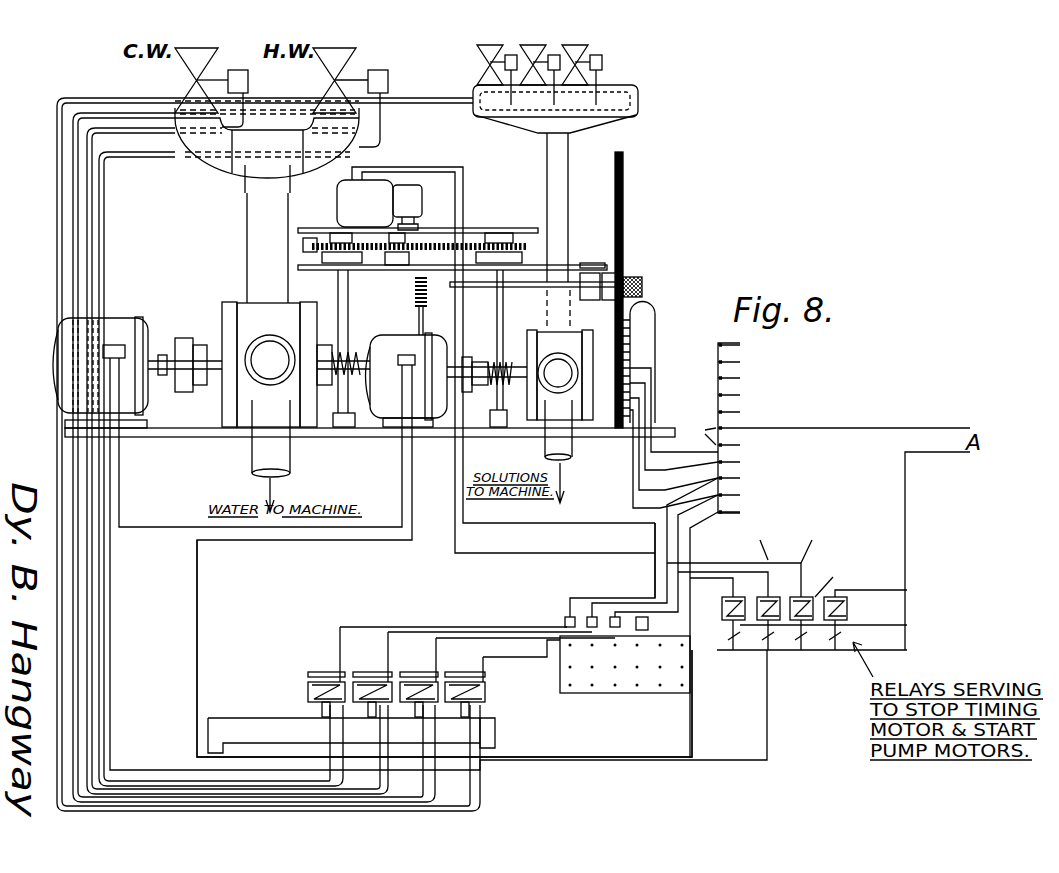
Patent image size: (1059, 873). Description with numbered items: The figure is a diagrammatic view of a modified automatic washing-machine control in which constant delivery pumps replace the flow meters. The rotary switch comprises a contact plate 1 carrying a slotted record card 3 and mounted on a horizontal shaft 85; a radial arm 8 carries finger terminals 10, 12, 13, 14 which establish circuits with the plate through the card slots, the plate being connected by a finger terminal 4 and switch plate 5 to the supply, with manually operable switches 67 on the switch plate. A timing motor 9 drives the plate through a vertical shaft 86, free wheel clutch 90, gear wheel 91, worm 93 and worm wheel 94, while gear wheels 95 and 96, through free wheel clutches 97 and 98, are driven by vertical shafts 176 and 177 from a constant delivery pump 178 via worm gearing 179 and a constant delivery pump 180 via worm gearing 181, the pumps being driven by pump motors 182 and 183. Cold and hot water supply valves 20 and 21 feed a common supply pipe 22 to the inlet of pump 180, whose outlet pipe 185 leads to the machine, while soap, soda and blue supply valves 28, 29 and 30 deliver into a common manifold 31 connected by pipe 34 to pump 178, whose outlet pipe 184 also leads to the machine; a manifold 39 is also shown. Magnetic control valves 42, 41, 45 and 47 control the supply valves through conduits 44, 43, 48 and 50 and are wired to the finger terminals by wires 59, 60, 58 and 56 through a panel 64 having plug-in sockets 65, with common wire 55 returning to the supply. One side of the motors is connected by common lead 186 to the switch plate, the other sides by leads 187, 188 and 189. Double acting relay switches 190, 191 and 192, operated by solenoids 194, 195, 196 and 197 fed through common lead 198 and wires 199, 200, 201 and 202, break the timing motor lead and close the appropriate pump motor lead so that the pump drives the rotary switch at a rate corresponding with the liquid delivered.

The contact plate 1 is at (615, 218).
The record card 3 is at (620, 218).
The finger terminal 4 is at (606, 428).
The switch plate 5 is at (740, 410).
The radial arm 8 is at (655, 312).
The electric motor 9 is at (384, 181).
The finger terminal 10 is at (630, 398).
The finger terminal 12 is at (630, 410).
The finger terminal 13 is at (630, 383).
The finger terminal 14 is at (630, 370).
The cold water supply valve 20 is at (184, 80).
The hot water supply valve 21 is at (326, 80).
The common supply pipe 22 is at (247, 230).
The soap supply valve 28 is at (478, 62).
The soda supply valve 29 is at (528, 55).
The blue supply valve 30 is at (570, 55).
The common manifold 31 is at (585, 120).
The common pipe 34 is at (568, 198).
The manifold 39 is at (250, 718).
The magnetic control valve 41 is at (308, 698).
The magnetic control valve 42 is at (372, 682).
The conduit 43 is at (102, 242).
The conduit 44 is at (90, 208).
The magnetic control valve 45 is at (485, 692).
The magnetic control valve 47 is at (420, 682).
The conduit 48 is at (65, 640).
The conduit 50 is at (77, 578).
The common wire 55 is at (907, 637).
The wire 56 is at (645, 610).
The wire 58 is at (717, 650).
The wire 59 is at (600, 603).
The wire 60 is at (567, 598).
The panel 64 is at (612, 690).
The plug-in socket 65 is at (646, 632).
The manually operable switch 67 is at (699, 432).
The horizontal shaft 85 is at (503, 296).
The vertical shaft 86 is at (412, 224).
The free wheel clutch 90 is at (396, 265).
The gear wheel 91 is at (442, 244).
The worm 93 is at (418, 300).
The worm wheel 94 is at (422, 312).
The gear wheel 95 is at (505, 233).
The gear wheel 96 is at (312, 238).
The free wheel clutch 97 is at (522, 257).
The free wheel clutch 98 is at (350, 263).
The vertical shaft 176 is at (497, 336).
The vertical shaft 177 is at (345, 348).
The constant delivery pump 178 is at (530, 392).
The worm gearing 179 is at (470, 392).
The constant delivery pump 180 is at (250, 410).
The worm gearing 181 is at (337, 376).
The pump motor 182 is at (410, 420).
The pump motor 183 is at (122, 403).
The outlet pipe 184 is at (568, 440).
The outlet pipe 185 is at (284, 470).
The common lead 186 is at (503, 359).
The lead 187 is at (508, 374).
The lead 188 is at (465, 648).
The lead 189 is at (460, 564).
The relay switch 190 is at (730, 650).
The relay switch 191 is at (768, 650).
The relay switch 192 is at (805, 650).
The solenoid 194 is at (733, 578).
The solenoid 195 is at (785, 560).
The solenoid 196 is at (805, 575).
The solenoid 197 is at (838, 597).
The common lead 198 is at (855, 600).
The wire 199 is at (695, 570).
The wire 200 is at (760, 539).
The wire 201 is at (812, 540).
The wire 202 is at (837, 576).